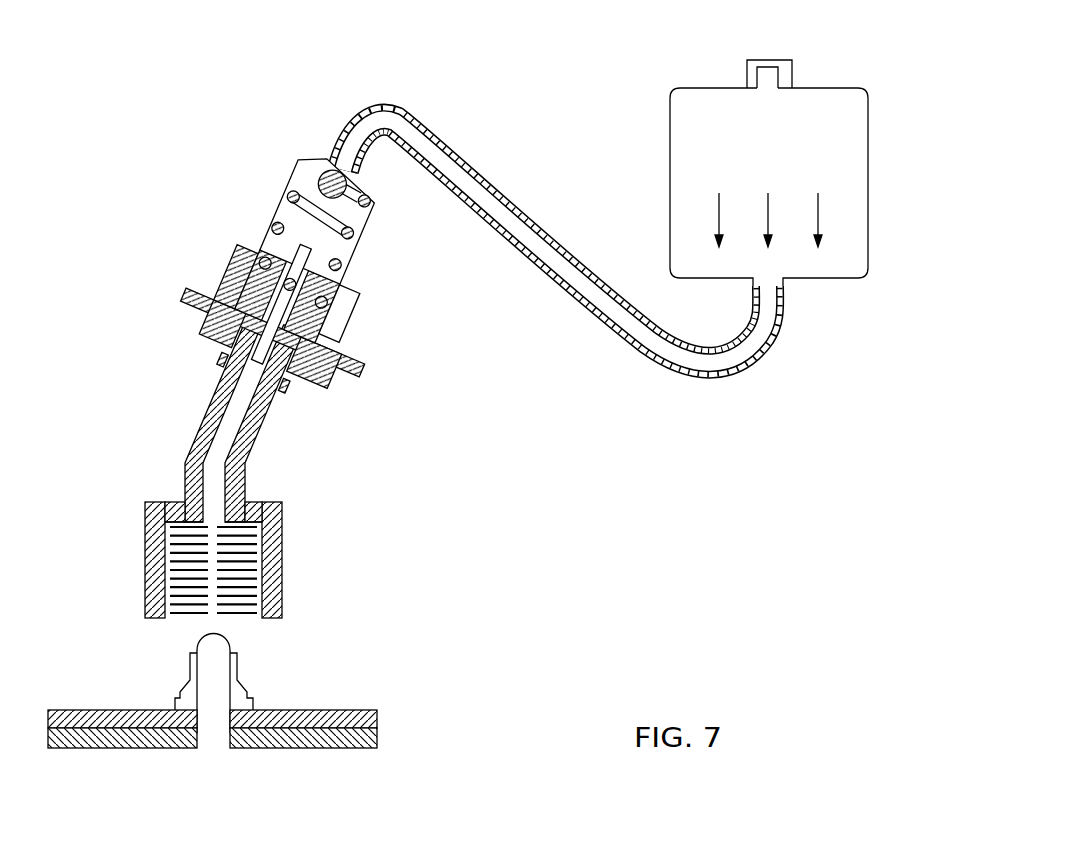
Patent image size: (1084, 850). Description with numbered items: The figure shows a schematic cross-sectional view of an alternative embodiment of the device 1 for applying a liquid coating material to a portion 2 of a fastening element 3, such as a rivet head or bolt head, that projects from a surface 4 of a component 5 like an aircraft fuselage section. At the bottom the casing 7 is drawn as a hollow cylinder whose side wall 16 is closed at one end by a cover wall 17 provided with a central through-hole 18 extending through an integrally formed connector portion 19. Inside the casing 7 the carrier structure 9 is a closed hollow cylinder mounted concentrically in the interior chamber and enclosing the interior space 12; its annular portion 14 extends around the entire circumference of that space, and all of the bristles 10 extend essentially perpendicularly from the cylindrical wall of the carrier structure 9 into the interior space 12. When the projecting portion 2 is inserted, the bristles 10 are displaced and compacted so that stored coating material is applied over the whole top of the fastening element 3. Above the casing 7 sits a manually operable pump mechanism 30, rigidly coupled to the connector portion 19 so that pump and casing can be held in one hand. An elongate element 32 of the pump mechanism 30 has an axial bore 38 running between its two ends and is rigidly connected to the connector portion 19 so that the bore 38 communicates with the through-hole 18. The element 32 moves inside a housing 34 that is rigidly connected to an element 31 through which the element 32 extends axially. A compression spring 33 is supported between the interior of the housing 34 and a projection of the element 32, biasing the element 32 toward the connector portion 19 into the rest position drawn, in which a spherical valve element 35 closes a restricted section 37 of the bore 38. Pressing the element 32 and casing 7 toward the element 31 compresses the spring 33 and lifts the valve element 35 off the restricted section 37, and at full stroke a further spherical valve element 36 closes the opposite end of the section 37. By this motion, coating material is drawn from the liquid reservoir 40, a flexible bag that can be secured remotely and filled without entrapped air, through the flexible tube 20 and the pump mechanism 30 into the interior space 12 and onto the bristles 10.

The device 1 is at (630, 498).
The portion 2 is at (207, 663).
The fastening element 3 is at (243, 691).
The surface 4 is at (352, 710).
The component 5 is at (377, 716).
The casing 7 is at (205, 560).
The carrier structure 9 is at (280, 528).
The bristles 10 is at (250, 584).
The interior space 12 is at (215, 613).
The annular portion 14 is at (167, 617).
The side wall 16 is at (145, 545).
The cover wall 17 is at (255, 500).
The through-hole 18 is at (213, 432).
The connector portion 19 is at (260, 428).
The flexible tube 20 is at (556, 262).
The pump mechanism 30 is at (273, 263).
The element 31 is at (327, 388).
The elongate element 32 is at (345, 310).
The compression spring 33 is at (362, 228).
The housing 34 is at (298, 163).
The spherical valve element 35 is at (240, 266).
The further spherical valve element 36 is at (325, 166).
The restricted section 37 is at (272, 231).
The axial bore 38 is at (253, 381).
The liquid reservoir 40 is at (849, 64).